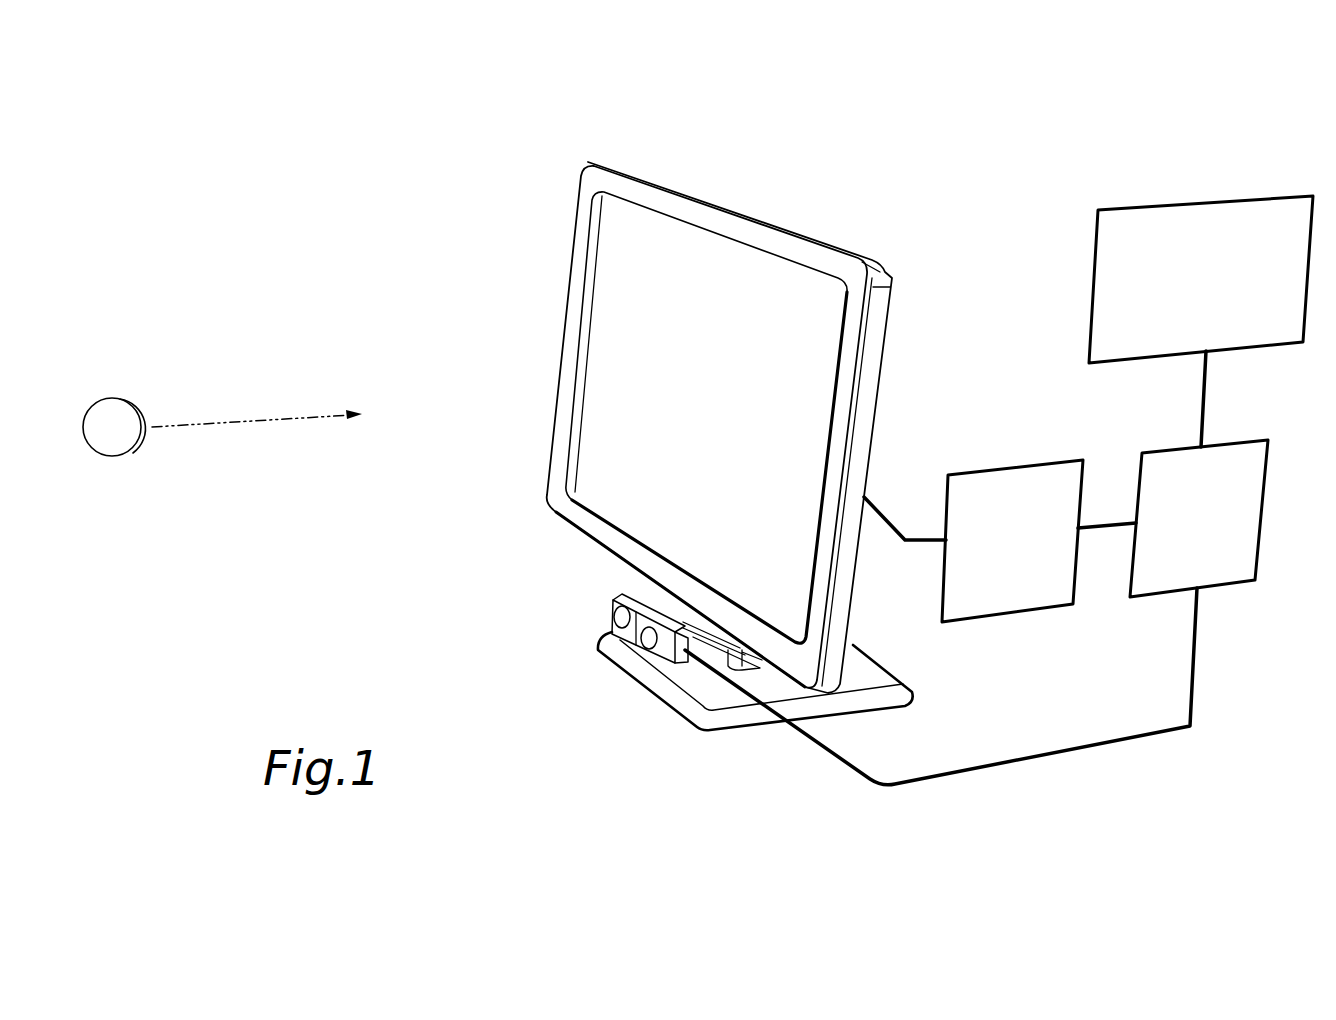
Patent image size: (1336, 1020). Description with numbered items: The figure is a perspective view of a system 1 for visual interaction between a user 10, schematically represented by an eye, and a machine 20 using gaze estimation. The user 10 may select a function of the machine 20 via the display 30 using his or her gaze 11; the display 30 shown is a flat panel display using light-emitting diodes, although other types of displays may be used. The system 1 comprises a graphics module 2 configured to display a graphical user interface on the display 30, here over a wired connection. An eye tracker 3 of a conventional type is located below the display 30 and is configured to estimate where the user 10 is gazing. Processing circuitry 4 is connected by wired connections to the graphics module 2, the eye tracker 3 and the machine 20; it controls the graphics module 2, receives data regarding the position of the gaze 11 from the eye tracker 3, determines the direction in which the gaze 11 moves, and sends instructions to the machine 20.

The system 1 is at (1004, 200).
The graphics module 2 is at (980, 493).
The eye tracker 3 is at (673, 655).
The processing circuitry 4 is at (1242, 550).
The user 10 is at (113, 440).
The gaze 11 is at (316, 417).
The machine 20 is at (1200, 230).
The display 30 is at (640, 178).